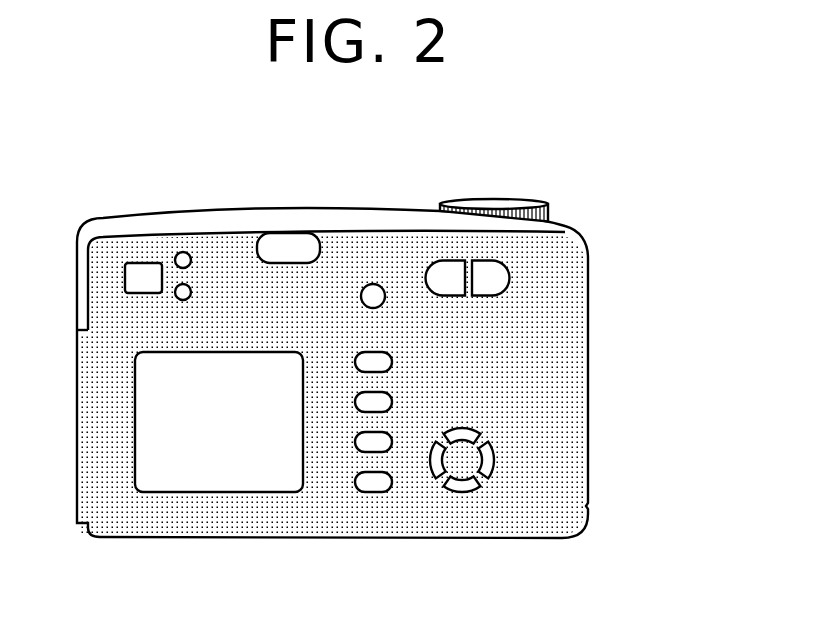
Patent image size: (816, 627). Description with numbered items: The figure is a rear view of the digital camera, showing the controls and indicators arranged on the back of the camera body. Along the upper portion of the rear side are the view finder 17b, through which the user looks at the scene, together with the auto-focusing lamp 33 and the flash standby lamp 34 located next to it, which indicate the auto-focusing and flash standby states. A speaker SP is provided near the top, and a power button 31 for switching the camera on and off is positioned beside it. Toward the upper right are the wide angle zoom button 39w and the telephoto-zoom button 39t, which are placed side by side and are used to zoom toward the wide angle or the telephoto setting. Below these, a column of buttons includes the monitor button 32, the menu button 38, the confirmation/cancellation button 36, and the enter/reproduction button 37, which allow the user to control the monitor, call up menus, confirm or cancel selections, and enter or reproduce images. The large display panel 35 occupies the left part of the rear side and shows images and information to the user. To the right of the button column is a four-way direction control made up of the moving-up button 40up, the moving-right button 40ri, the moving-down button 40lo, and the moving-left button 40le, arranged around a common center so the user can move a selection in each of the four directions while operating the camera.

The view finder 17b is at (142, 272).
The auto-focusing lamp 33 is at (187, 253).
The flash standby lamp 34 is at (176, 297).
The speaker SP is at (287, 240).
The power button 31 is at (377, 292).
The wide angle zoom button 39w is at (442, 273).
The telephoto-zoom button 39t is at (490, 273).
The monitor button 32 is at (380, 359).
The menu button 38 is at (380, 399).
The confirmation/cancellation button 36 is at (357, 451).
The enter/reproduction button 37 is at (373, 490).
The display panel 35 is at (220, 474).
The moving-up button 40up is at (480, 433).
The moving-right button 40ri is at (496, 460).
The moving-down button 40lo is at (460, 492).
The moving-left button 40le is at (432, 472).